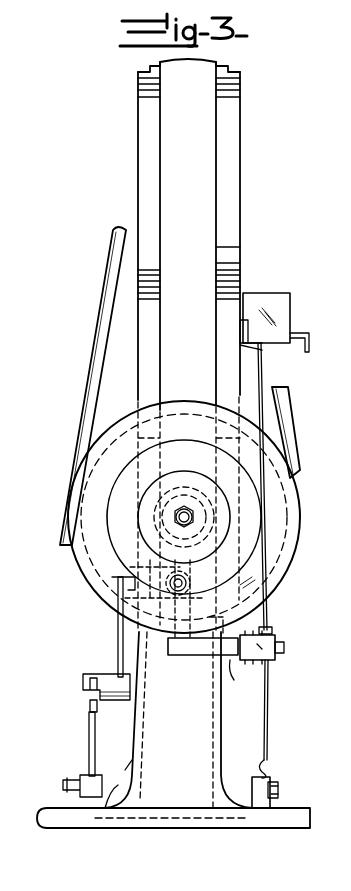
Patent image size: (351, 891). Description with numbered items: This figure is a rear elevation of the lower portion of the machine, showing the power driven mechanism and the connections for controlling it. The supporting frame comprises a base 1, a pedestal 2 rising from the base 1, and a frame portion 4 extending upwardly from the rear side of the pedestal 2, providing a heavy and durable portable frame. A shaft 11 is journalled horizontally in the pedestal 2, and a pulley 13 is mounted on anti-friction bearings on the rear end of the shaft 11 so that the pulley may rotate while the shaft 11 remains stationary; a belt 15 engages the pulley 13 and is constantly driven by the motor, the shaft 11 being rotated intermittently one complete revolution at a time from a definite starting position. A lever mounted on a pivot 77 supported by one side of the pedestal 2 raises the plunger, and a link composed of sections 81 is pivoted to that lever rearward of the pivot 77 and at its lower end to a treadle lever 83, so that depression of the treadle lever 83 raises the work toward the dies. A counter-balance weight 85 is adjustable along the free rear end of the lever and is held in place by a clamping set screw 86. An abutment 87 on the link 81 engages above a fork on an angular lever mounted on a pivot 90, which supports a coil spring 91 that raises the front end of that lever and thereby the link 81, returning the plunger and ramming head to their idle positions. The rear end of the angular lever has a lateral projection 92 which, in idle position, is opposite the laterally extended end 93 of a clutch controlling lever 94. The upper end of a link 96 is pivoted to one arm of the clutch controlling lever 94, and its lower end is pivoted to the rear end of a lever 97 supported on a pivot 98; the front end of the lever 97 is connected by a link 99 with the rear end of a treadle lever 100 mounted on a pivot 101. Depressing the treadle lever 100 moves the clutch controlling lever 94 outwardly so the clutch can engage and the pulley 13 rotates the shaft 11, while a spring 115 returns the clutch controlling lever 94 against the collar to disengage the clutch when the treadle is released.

The base 1 is at (192, 817).
The pedestal 2 is at (205, 728).
The frame portion 4 is at (205, 207).
The shaft 11 is at (184, 506).
The pulley 13 is at (300, 517).
The belt 15 is at (112, 305).
The pivot 77 is at (242, 333).
The link sections 81 is at (260, 377).
The treadle lever 83 is at (262, 800).
The counter-balance weight 85 is at (278, 295).
The clamping set screw 86 is at (309, 345).
The abutment 87 is at (273, 630).
The pivot 90 is at (284, 648).
The coil spring 91 is at (234, 680).
The lateral projection 92 is at (271, 660).
The laterally extended end 93 is at (203, 655).
The clutch controlling lever 94 is at (213, 601).
The link 96 is at (120, 628).
The lever 97 is at (92, 706).
The pivot 98 is at (86, 680).
The link 99 is at (89, 748).
The treadle lever 100 is at (115, 780).
The pivot 101 is at (72, 788).
The spring 115 is at (205, 572).